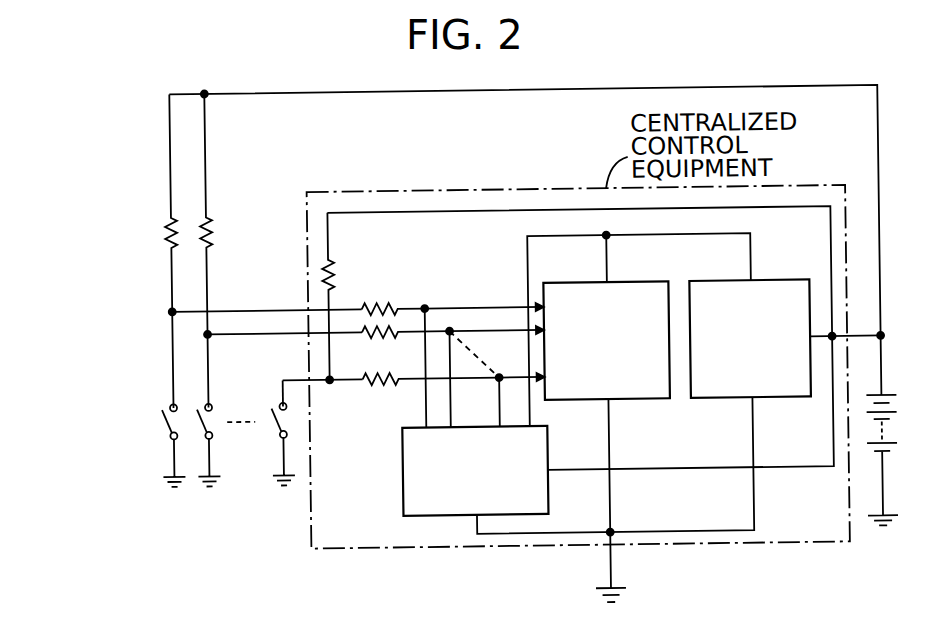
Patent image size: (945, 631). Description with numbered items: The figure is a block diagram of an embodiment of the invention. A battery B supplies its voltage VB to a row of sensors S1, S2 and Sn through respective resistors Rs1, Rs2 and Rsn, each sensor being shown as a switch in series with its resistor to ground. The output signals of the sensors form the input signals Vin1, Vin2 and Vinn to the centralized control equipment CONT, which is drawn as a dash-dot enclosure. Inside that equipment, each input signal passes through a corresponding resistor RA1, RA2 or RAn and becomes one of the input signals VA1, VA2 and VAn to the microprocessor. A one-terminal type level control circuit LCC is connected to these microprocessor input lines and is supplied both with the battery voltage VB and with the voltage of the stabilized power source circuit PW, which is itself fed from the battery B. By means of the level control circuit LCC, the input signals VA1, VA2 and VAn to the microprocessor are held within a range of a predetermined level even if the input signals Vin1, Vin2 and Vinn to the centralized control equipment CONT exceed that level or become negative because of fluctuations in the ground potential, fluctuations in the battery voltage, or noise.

The resistor Rs1 is at (145, 251).
The resistor Rs2 is at (223, 250).
The resistor Rsn is at (346, 296).
The sensor S1 is at (161, 439).
The sensor S2 is at (221, 438).
The sensor Sn is at (271, 433).
The input signal Vin1 is at (264, 300).
The input signal Vin2 is at (283, 346).
The input signal Vinn is at (304, 370).
The resistor RA1 is at (393, 296).
The resistor RA2 is at (406, 346).
The resistor RAn is at (431, 393).
The input signal to the microprocessor VA1 is at (483, 352).
The input signal to the microprocessor VA2 is at (496, 367).
The input signal to the microprocessor VAn is at (498, 378).
The centralized control equipment CONT is at (568, 189).
The stabilized power source circuit PW is at (780, 400).
The one-terminal type level control circuit LCC is at (401, 487).
The voltage of the battery VB is at (864, 340).
The battery B is at (891, 460).